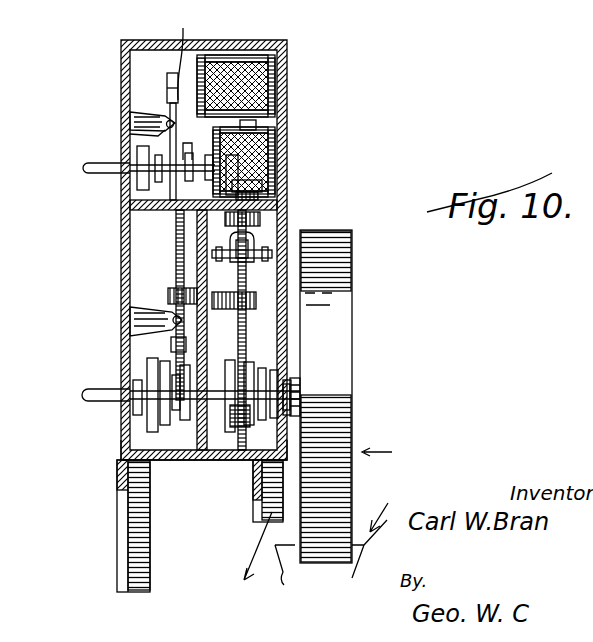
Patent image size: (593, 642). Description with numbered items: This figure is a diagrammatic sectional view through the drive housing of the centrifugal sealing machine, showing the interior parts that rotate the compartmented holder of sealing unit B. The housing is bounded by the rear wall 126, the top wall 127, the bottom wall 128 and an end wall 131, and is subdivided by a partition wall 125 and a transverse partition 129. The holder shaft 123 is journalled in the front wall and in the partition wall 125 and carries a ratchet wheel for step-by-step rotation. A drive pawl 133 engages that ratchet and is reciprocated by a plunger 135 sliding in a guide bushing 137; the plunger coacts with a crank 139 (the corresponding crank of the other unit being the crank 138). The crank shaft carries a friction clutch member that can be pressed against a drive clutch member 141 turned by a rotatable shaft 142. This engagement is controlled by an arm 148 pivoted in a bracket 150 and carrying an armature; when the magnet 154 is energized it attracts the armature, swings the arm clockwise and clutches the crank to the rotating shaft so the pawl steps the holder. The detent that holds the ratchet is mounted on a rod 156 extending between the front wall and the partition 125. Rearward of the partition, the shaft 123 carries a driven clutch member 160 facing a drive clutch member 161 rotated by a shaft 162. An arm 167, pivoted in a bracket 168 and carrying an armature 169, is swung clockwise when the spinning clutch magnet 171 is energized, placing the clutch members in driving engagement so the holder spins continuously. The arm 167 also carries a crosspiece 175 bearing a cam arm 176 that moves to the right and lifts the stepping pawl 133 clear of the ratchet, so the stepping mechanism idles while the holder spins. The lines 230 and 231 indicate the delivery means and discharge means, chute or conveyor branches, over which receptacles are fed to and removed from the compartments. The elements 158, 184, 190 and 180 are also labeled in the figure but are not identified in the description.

The lead wire 158 is at (167, 53).
The top wall 127 is at (258, 40).
The magnet 154 is at (275, 65).
The arm 148 is at (170, 104).
The bracket 150 is at (160, 119).
The link 190 is at (158, 135).
The drive clutch member 141 is at (138, 150).
The rotatable shaft 142 is at (100, 161).
The armature 169 is at (198, 142).
The magnet 171 is at (280, 140).
The crank 139 is at (277, 160).
The plunger 135 is at (276, 175).
The guide bushing 137 is at (270, 198).
The guide block 184 is at (270, 214).
The rod 156 is at (256, 246).
The transverse partition 129 is at (121, 203).
The partition wall 125 is at (180, 220).
The arm 167 is at (176, 272).
The crosspiece 175 is at (168, 295).
The bracket 168 is at (140, 313).
The driven clutch member 160 is at (170, 362).
The drive clutch member 161 is at (150, 358).
The shaft 162 is at (84, 395).
The end wall 131 is at (122, 423).
The rear wall 126 is at (118, 437).
The bottom wall 128 is at (117, 454).
The crank 138 is at (236, 436).
The cam arm 176 is at (220, 295).
The gear 180 is at (340, 302).
The drive pawl 133 is at (246, 340).
The shaft 123 is at (300, 393).
The discharge means 231 is at (269, 559).
The delivery means 230 is at (354, 554).
The centrifugal sealing unit B is at (387, 454).